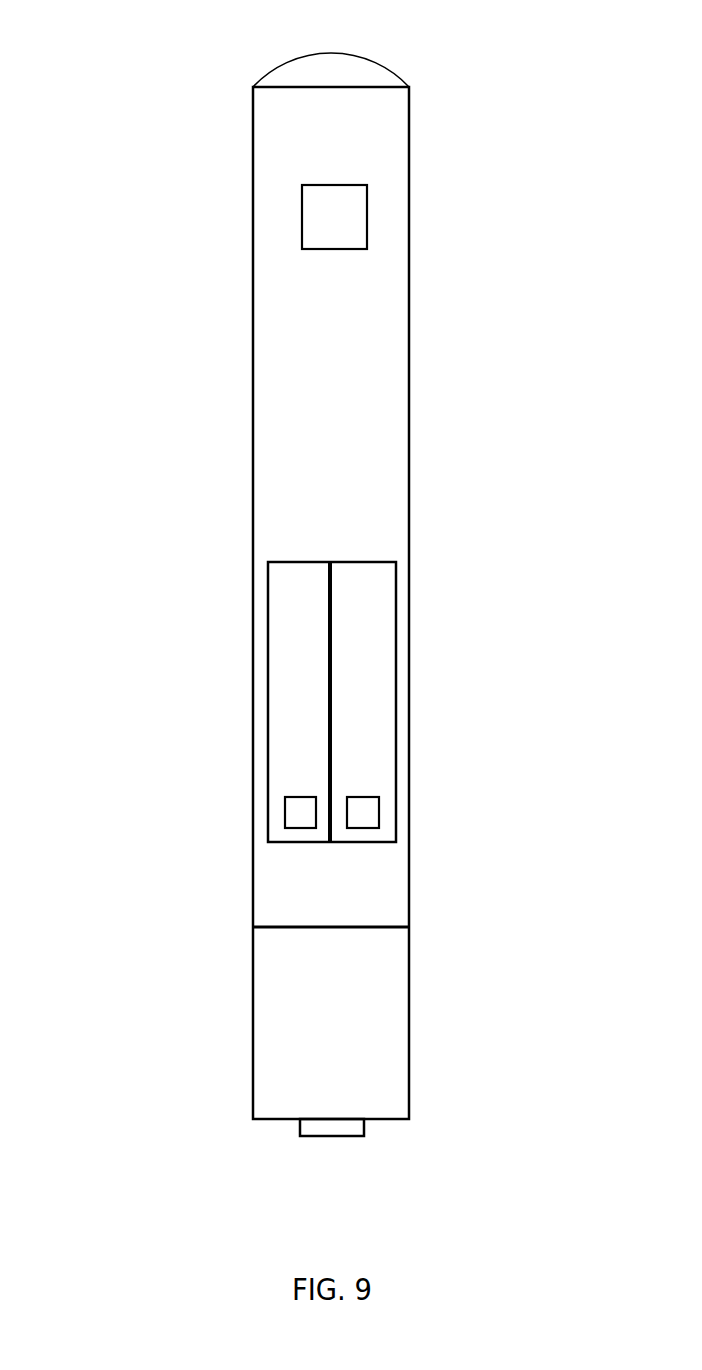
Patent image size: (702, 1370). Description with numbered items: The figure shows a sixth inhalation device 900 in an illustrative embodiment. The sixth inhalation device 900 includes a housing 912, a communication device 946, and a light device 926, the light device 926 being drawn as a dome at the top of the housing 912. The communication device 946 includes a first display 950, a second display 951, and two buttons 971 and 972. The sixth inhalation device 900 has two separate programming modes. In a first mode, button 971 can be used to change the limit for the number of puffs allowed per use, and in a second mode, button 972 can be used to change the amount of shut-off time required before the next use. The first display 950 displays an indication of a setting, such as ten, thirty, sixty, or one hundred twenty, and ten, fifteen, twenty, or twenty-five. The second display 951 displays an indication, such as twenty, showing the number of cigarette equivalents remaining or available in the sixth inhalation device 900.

The sixth inhalation device 900 is at (170, 137).
The housing 912 is at (410, 132).
The light device 926 is at (382, 70).
The second display 951 is at (367, 230).
The communication device 946 is at (394, 260).
The first display 950 is at (393, 612).
The button 971 is at (379, 813).
The button 972 is at (283, 810).